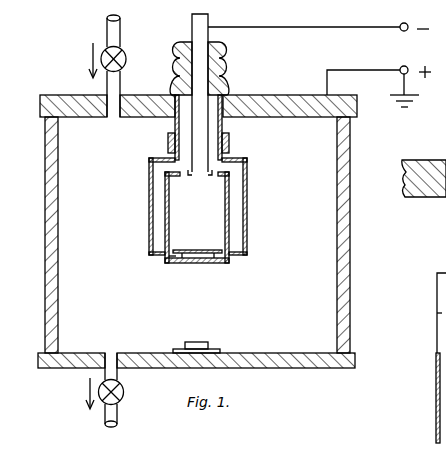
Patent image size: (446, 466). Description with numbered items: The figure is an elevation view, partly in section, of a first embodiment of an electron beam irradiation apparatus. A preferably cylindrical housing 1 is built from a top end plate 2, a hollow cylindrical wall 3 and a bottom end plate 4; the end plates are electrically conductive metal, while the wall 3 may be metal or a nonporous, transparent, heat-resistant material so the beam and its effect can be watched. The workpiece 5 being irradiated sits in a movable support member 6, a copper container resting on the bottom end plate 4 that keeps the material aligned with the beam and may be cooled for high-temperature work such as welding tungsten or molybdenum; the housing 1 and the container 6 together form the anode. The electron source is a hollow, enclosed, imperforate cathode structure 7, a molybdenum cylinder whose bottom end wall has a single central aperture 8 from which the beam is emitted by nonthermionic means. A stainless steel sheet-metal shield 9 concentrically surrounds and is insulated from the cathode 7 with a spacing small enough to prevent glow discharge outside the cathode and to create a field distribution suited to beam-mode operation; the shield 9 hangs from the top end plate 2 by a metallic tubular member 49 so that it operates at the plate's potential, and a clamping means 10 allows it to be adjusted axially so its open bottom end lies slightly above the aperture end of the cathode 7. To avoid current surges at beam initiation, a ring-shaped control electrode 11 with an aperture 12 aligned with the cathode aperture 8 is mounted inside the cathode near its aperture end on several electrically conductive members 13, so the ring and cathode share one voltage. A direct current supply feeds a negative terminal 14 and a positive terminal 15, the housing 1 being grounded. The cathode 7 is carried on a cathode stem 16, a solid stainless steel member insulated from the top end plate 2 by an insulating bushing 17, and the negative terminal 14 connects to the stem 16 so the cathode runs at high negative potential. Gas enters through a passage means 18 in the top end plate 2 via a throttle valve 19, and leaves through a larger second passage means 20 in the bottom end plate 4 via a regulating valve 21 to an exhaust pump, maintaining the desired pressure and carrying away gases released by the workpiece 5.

The housing 1 is at (350, 250).
The top end plate 2 is at (285, 96).
The hollow cylindrical wall 3 is at (344, 170).
The bottom end plate 4 is at (319, 368).
The workpiece 5 is at (197, 342).
The movable support member 6 is at (220, 350).
The cathode structure 7 is at (225, 205).
The aperture 8 is at (197, 263).
The electrically conductive shield 9 is at (248, 200).
The clamping means 10 is at (229, 143).
The control electrode 11 is at (182, 250).
The aperture 12 is at (200, 250).
The electrically conductive members 13 is at (172, 260).
The negative terminal 14 is at (400, 25).
The positive terminal 15 is at (400, 68).
The cathode stem 16 is at (192, 27).
The insulating bushing 17 is at (224, 70).
The passage means 18 is at (107, 87).
The throttle valve 19 is at (122, 52).
The second passage means 20 is at (104, 378).
The regulating valve 21 is at (122, 394).
The metallic tubular member 49 is at (173, 127).